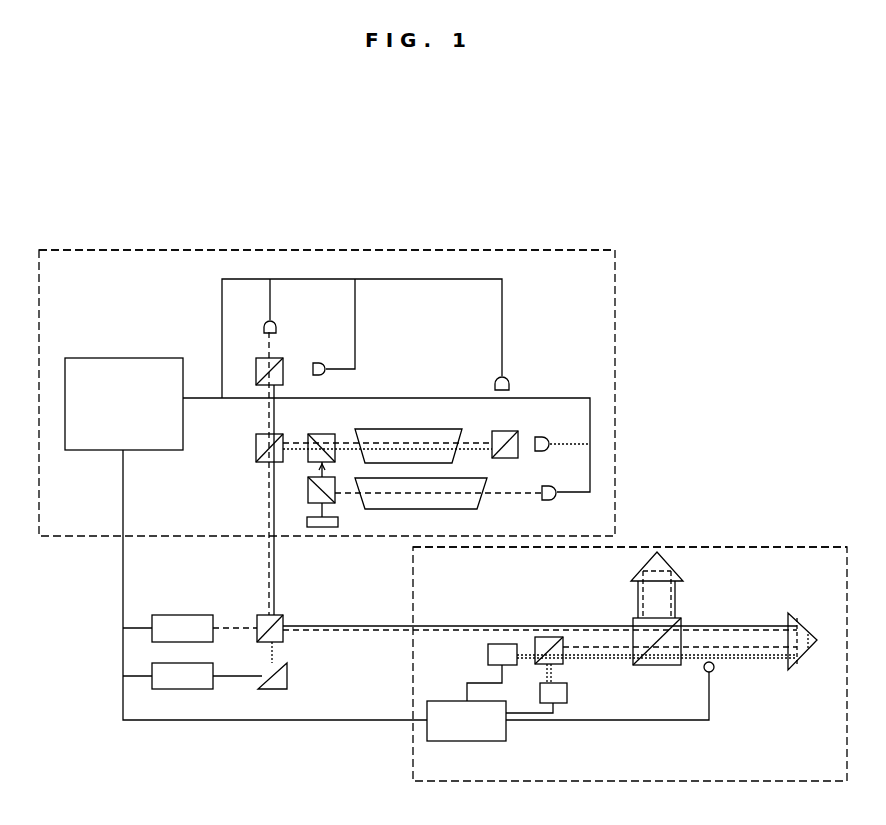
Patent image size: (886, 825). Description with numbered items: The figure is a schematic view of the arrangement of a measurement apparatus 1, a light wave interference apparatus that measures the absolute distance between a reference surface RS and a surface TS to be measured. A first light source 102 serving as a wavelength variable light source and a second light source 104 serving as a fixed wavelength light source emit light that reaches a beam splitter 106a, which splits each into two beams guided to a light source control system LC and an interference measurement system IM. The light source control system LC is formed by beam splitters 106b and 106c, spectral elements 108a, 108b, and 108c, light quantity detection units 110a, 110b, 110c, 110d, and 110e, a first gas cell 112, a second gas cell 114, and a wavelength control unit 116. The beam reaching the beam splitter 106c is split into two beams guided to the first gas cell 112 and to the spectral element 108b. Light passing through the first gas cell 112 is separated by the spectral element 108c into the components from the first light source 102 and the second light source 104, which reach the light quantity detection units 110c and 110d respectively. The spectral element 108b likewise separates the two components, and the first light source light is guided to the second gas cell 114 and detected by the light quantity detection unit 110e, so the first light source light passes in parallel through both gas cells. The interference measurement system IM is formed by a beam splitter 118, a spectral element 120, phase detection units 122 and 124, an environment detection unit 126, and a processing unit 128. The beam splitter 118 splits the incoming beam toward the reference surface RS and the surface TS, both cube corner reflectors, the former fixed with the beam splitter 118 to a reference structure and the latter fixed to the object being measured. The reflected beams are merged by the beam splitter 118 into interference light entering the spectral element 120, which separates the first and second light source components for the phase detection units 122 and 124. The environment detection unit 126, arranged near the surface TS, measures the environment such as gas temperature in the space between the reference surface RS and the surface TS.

The measurement apparatus 1 is at (607, 187).
The first light source 102 is at (163, 614).
The second light source 104 is at (195, 690).
The beam splitter 106a is at (280, 616).
The beam splitter 106b is at (260, 463).
The beam splitter 106c is at (308, 442).
The spectral element 108a is at (280, 360).
The spectral element 108b is at (336, 500).
The spectral element 108c is at (508, 458).
The light quantity detection unit 110a is at (276, 323).
The light quantity detection unit 110b is at (328, 377).
The light quantity detection unit 110c is at (496, 377).
The light quantity detection unit 110d is at (541, 436).
The light quantity detection unit 110e is at (550, 500).
The first gas cell 112 is at (436, 428).
The second gas cell 114 is at (482, 504).
The wavelength control unit 116 is at (91, 357).
The beam splitter 118 is at (678, 620).
The spectral element 120 is at (539, 636).
The phase detection unit 122 is at (567, 692).
The phase detection unit 124 is at (488, 654).
The environment detection unit 126 is at (714, 673).
The processing unit 128 is at (506, 735).
The light source control system LC is at (145, 248).
The interference measurement system IM is at (792, 547).
The reference surface RS is at (631, 580).
The surface to be measured TS is at (793, 612).